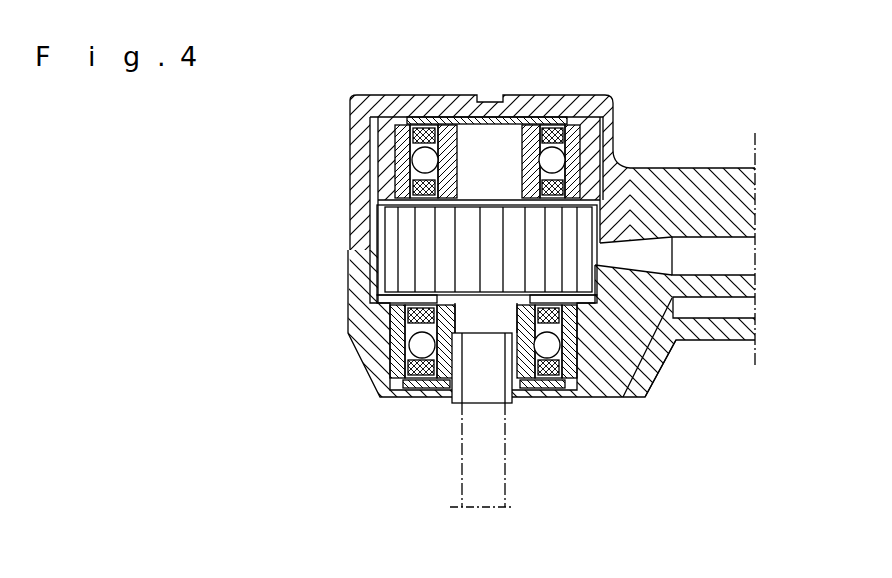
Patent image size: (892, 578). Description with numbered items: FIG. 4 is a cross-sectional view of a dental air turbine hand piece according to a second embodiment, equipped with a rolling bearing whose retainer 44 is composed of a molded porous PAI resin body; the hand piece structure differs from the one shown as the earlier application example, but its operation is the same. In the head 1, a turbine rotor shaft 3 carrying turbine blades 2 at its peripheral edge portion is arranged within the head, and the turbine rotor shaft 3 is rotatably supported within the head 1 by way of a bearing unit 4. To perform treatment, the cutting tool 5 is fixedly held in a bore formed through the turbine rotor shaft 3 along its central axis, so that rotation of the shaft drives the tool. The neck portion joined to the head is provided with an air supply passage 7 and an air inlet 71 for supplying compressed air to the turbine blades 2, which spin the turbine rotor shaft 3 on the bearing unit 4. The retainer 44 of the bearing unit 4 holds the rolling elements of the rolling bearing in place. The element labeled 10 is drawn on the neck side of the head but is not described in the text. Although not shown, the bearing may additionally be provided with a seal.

The head 1 is at (366, 74).
The turbine blades 2 is at (425, 247).
The turbine rotor shaft 3 is at (443, 393).
The bearing unit 4 is at (395, 155).
The cutting tool 5 is at (505, 440).
The air supply passage 7 is at (650, 248).
The air inlet 71 is at (613, 238).
The flange 10 is at (670, 362).
The retainer 44 is at (428, 130).